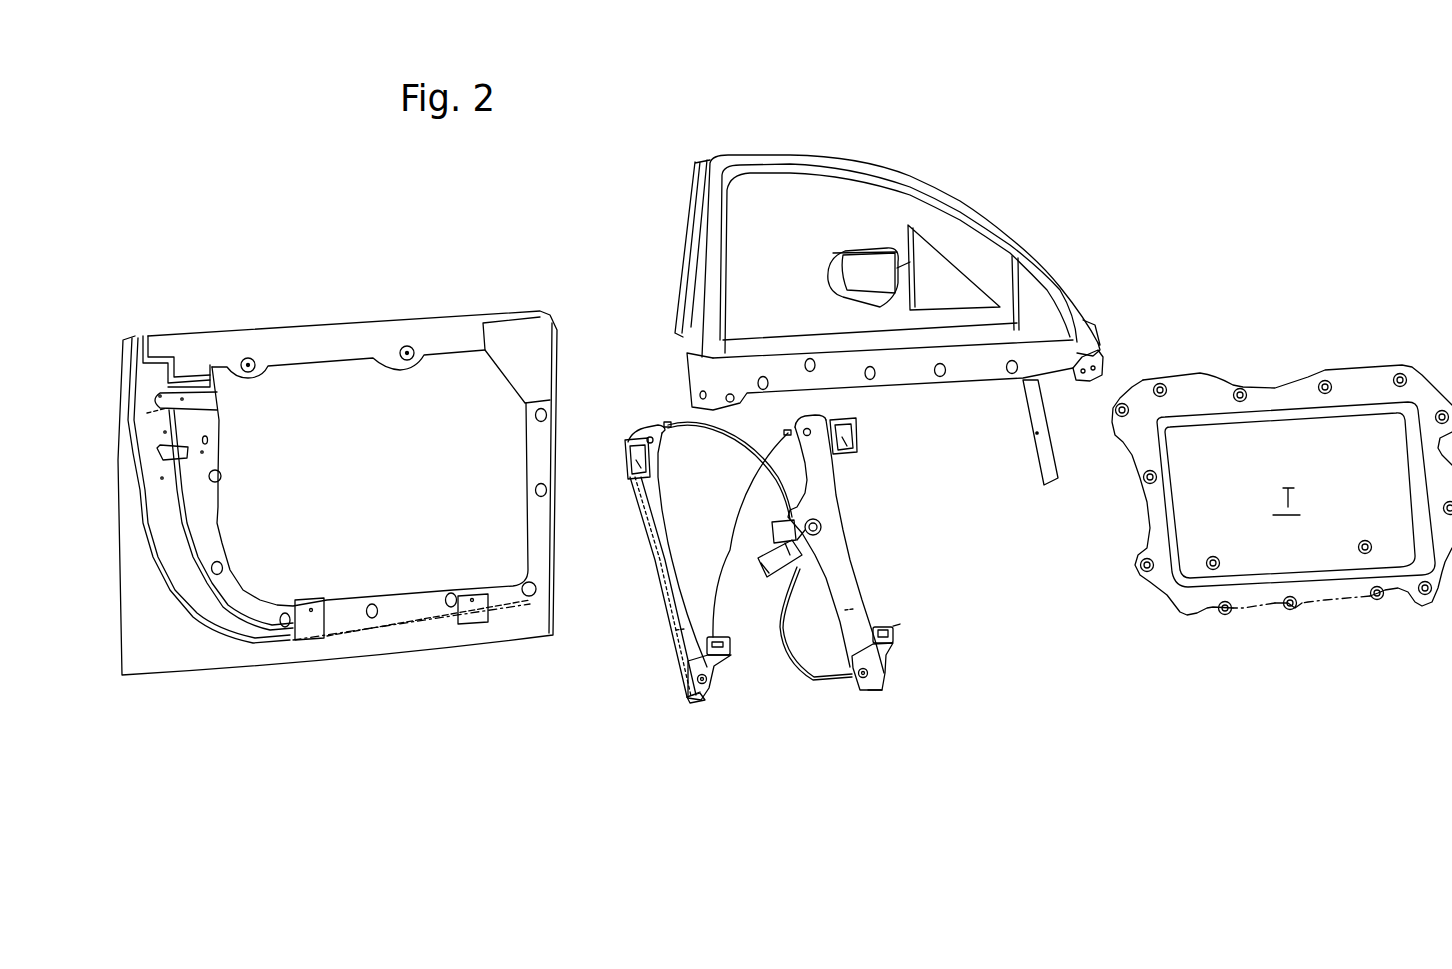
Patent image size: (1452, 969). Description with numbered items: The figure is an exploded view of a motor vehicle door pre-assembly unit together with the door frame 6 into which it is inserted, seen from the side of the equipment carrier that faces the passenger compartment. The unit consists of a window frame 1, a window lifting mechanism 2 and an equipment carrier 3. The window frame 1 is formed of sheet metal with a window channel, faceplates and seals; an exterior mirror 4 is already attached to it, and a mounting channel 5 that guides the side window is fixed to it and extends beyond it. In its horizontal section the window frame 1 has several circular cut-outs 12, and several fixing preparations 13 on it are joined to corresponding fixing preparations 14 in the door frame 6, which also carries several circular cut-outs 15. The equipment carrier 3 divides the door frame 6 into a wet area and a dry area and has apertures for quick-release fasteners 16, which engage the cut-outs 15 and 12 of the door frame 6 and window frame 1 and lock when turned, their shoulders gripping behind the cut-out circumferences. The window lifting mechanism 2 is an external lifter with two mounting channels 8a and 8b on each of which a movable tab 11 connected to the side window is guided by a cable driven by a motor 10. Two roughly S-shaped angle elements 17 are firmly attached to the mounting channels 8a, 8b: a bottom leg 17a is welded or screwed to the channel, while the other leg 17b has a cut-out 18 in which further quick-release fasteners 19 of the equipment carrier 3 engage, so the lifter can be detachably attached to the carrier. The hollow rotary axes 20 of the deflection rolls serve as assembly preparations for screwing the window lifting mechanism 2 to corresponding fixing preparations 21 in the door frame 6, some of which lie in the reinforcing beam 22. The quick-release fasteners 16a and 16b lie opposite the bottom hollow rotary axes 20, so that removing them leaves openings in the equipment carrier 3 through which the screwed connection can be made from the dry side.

The window frame 1 is at (983, 220).
The window lifting mechanism 2 is at (868, 578).
The equipment carrier 3 is at (1363, 360).
The exterior mirror 4 is at (833, 257).
The mounting channel 5 is at (1047, 457).
The door frame 6 is at (383, 300).
The mounting channel 8a is at (672, 589).
The mounting channel 8b is at (843, 553).
The motor 10 is at (787, 512).
The movable tab 11 is at (628, 467).
The circular cut-outs 12 is at (1011, 372).
The fixing preparations 13 is at (696, 395).
The fixing preparations 14 is at (143, 343).
The circular cut-outs 15 is at (222, 474).
The quick-release fasteners 16 is at (1241, 390).
The quick-release fastener 16a is at (1226, 615).
The quick-release fastener 16b is at (1382, 600).
The angle elements 17 is at (725, 672).
The bottom leg 17a is at (873, 690).
The other leg 17b is at (900, 623).
The cut-out 18 is at (720, 638).
The quick-release fasteners 19 is at (1211, 570).
The hollow rotary axes 20 is at (707, 700).
The fixing preparations 21 is at (248, 360).
The reinforcing beam 22 is at (330, 332).